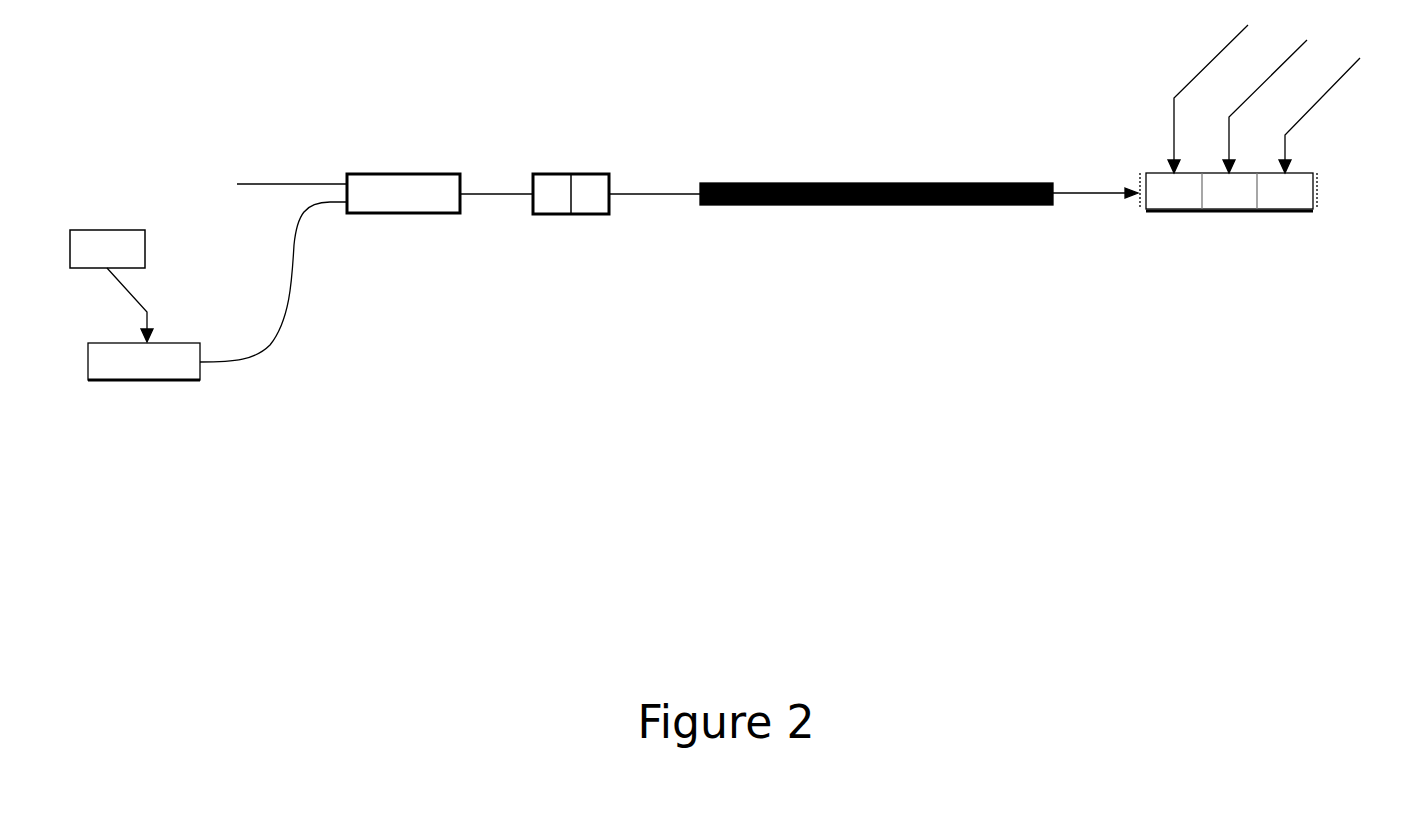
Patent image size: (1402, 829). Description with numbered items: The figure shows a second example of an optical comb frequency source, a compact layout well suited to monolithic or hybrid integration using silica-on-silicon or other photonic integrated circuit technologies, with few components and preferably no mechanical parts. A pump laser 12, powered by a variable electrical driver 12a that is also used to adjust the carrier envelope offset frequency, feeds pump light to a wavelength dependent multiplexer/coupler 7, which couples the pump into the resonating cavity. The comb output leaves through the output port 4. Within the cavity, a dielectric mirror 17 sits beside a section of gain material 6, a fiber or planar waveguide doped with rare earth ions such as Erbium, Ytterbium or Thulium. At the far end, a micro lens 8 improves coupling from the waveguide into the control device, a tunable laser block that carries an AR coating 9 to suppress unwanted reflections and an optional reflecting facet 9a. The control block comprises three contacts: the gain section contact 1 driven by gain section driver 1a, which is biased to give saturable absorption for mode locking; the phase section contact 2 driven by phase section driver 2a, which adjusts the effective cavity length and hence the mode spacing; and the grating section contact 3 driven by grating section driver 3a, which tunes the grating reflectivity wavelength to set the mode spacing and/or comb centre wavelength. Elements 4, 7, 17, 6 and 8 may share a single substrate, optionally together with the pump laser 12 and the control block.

The contact (gain section) 1 is at (1183, 191).
The contact (phase section) 2 is at (1238, 191).
The contact (grating section) 3 is at (1285, 193).
The gain section driver 1a is at (1226, 86).
The phase section driver 2a is at (1280, 93).
The grating section driver 3a is at (1336, 103).
The output port 4 is at (277, 164).
The section of gain material 6 is at (880, 165).
The wavelength dependent multiplexer/coupler 7 is at (407, 170).
The micro lens 8 is at (1095, 210).
The AR coating 9 is at (1242, 178).
The reflecting facet 9a is at (1126, 177).
The pump laser 12 is at (217, 291).
The electrical driver for pump laser 12a is at (111, 286).
The dielectric mirror 17 is at (579, 170).